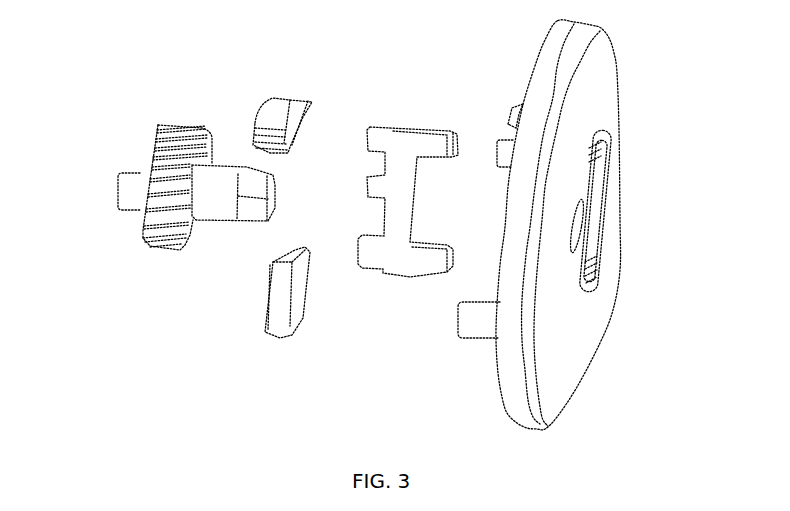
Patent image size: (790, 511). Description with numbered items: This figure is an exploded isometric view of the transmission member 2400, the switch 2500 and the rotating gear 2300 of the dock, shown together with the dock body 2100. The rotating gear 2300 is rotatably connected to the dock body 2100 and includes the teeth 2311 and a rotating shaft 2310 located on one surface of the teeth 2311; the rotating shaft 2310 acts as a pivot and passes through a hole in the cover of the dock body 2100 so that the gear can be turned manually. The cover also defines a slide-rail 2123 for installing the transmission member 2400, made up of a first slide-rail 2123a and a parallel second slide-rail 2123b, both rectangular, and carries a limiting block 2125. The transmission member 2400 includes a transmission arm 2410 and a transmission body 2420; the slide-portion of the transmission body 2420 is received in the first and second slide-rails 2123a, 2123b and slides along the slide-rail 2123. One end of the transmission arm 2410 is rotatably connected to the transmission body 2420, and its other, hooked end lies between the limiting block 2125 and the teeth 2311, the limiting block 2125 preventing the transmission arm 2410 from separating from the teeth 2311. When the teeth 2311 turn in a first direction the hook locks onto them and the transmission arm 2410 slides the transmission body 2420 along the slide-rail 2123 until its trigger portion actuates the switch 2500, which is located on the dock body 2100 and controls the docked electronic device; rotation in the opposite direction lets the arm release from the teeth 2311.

The dock body 2100 is at (508, 368).
The slide-rail 2123 is at (668, 207).
The first slide-rail 2123a is at (602, 133).
The second slide-rail 2123b is at (636, 267).
The limiting block 2125 is at (490, 132).
The rotating gear 2300 is at (141, 237).
The rotating shaft 2310 is at (215, 207).
The teeth 2311 is at (155, 223).
The transmission member 2400 is at (304, 153).
The transmission arm 2410 is at (287, 100).
The transmission body 2420 is at (393, 158).
The switch 2500 is at (283, 323).